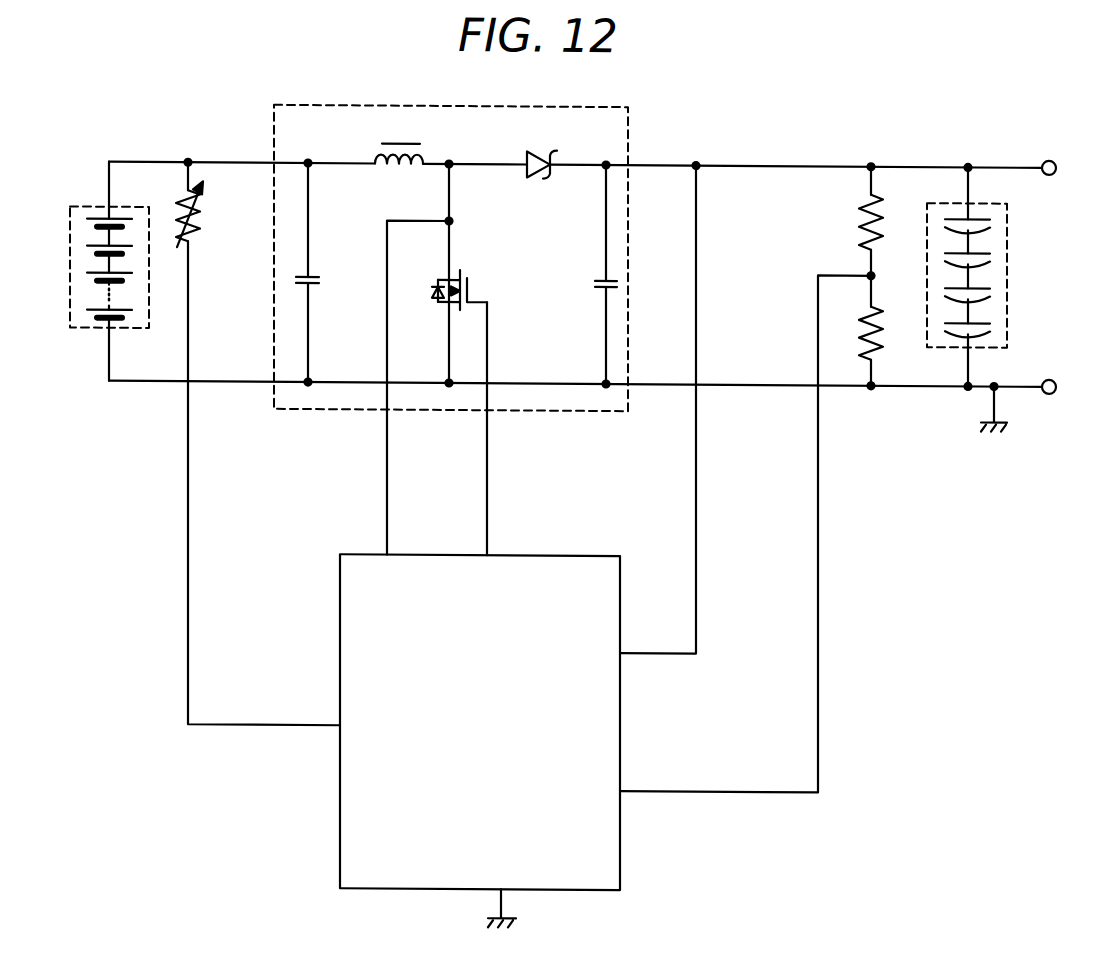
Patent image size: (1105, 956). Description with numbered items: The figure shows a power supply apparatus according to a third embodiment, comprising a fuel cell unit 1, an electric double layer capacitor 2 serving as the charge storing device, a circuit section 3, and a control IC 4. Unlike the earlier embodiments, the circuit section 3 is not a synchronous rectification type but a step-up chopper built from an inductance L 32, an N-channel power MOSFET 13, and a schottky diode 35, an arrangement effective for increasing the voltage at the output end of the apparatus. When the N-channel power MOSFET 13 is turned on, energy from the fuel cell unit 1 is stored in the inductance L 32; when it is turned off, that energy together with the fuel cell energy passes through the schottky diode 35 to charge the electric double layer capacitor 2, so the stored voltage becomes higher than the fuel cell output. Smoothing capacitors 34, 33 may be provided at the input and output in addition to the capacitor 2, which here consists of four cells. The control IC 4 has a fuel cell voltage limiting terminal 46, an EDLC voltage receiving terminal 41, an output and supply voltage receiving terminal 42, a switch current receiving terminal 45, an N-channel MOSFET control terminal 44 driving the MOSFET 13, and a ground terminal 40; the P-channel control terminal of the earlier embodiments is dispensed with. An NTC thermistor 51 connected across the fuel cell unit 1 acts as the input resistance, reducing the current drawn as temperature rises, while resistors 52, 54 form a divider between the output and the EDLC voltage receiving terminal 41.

The fuel cell unit 1 is at (90, 204).
The electric double layer capacitor (EDLC) 2 is at (1007, 233).
The circuit section 3 is at (273, 116).
The control IC 4 is at (620, 868).
The N-channel power MOSFET 13 is at (452, 263).
The inductance L 32 is at (397, 135).
The capacitor 33 is at (622, 279).
The input capacitor 34 is at (320, 281).
The schottky diode 35 is at (537, 147).
The ground terminal 40 is at (498, 904).
The EDLC voltage receiving terminal (FBout) 41 is at (658, 786).
The output voltage and supply voltage receiving terminal (Vout) 42 is at (658, 648).
The N-channel power MOSFET control terminal (BG) 44 is at (489, 514).
The switch current receiving terminal (SENSE) 45 is at (389, 514).
The fuel cell voltage limiting terminal (Vlim) 46 is at (287, 721).
The NTC thermistor 51 is at (192, 236).
The resistor 52 is at (880, 211).
The resistor 54 is at (878, 351).